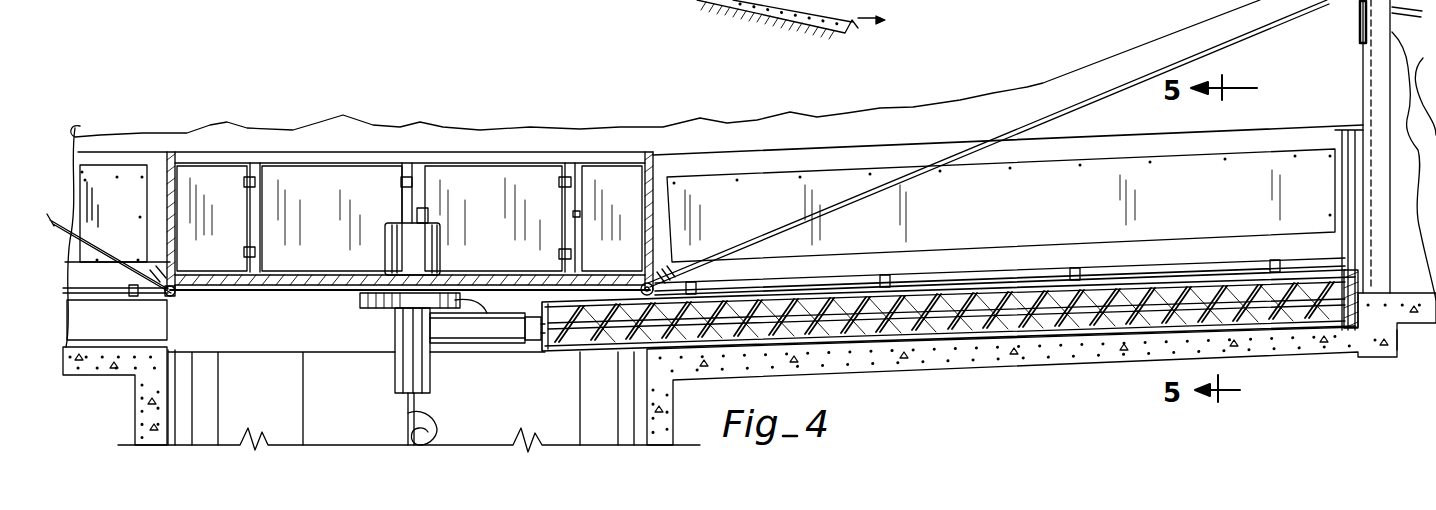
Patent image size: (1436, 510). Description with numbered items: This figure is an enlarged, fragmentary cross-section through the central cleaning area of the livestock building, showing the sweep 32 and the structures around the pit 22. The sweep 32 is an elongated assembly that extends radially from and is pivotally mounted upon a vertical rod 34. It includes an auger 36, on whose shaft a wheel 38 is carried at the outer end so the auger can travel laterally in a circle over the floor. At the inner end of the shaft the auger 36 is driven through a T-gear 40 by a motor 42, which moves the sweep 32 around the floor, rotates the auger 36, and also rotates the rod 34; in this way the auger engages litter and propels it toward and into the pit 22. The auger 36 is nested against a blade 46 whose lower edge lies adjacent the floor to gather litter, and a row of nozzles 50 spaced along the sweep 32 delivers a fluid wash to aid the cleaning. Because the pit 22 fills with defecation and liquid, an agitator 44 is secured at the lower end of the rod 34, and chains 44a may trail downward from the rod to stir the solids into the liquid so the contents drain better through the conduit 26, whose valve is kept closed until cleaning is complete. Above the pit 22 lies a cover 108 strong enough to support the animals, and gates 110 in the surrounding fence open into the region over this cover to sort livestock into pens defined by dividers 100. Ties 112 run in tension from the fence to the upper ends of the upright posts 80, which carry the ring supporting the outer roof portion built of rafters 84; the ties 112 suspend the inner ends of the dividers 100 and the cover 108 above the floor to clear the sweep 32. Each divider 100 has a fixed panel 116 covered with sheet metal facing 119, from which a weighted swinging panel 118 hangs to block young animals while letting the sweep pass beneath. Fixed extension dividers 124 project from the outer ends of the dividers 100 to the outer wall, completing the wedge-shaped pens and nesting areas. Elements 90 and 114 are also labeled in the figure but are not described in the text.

The pit 22 is at (640, 405).
The conduit 26 is at (703, 5).
The sweep 32 is at (1030, 308).
The vertical rod 34 is at (422, 407).
The auger 36 is at (1103, 308).
The wheel 38 is at (1349, 333).
The T-gear 40 is at (472, 330).
The motor 42 is at (436, 246).
The agitator 44 is at (668, 6).
The chains 44a is at (404, 413).
The blade 46 is at (1238, 332).
The nozzles 50 is at (692, 282).
The upright posts 80 is at (1383, 88).
The rafters 84 is at (1363, 38).
The brace connection 90 is at (1358, 18).
The dividers 100 is at (913, 151).
The cover 108 is at (325, 278).
The gates 110 is at (200, 180).
The ties 112 is at (102, 250).
The brace pin 114 is at (173, 293).
The fixed panel 116 is at (1350, 233).
The swinging panel 118 is at (1362, 333).
The sheet metal facing 119 is at (1292, 160).
The extension dividers 124 is at (1414, 165).